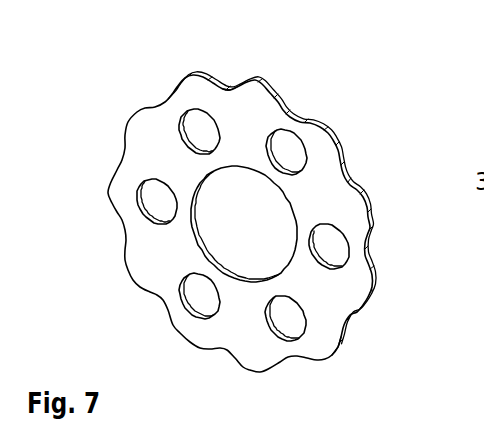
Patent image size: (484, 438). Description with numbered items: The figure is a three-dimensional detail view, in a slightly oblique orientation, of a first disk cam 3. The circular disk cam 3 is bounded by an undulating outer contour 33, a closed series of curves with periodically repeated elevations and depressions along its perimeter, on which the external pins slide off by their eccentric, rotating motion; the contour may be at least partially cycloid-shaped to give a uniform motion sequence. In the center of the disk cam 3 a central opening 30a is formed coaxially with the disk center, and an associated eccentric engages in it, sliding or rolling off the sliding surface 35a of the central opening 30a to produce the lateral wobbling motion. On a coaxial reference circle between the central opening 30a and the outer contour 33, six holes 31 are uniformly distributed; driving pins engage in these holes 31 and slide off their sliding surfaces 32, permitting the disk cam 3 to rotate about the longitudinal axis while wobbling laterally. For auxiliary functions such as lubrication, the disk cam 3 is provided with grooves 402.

The first disk cam 3 is at (145, 250).
The central opening 30a is at (237, 219).
The holes 31 is at (287, 318).
The sliding surfaces 32 is at (323, 262).
The undulating outer contour 33 is at (272, 88).
The sliding surface 35a is at (216, 254).
The grooves 402 is at (227, 88).